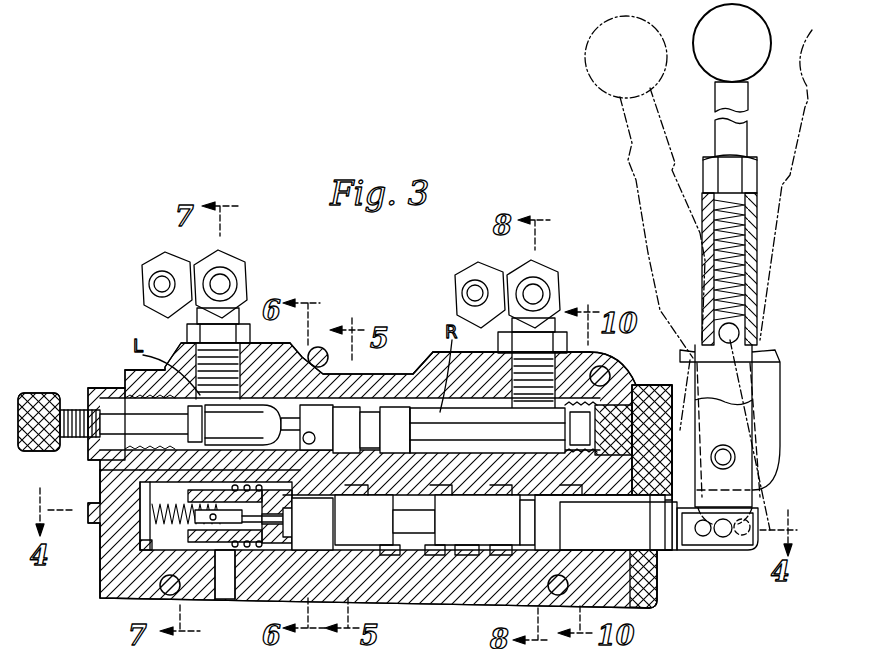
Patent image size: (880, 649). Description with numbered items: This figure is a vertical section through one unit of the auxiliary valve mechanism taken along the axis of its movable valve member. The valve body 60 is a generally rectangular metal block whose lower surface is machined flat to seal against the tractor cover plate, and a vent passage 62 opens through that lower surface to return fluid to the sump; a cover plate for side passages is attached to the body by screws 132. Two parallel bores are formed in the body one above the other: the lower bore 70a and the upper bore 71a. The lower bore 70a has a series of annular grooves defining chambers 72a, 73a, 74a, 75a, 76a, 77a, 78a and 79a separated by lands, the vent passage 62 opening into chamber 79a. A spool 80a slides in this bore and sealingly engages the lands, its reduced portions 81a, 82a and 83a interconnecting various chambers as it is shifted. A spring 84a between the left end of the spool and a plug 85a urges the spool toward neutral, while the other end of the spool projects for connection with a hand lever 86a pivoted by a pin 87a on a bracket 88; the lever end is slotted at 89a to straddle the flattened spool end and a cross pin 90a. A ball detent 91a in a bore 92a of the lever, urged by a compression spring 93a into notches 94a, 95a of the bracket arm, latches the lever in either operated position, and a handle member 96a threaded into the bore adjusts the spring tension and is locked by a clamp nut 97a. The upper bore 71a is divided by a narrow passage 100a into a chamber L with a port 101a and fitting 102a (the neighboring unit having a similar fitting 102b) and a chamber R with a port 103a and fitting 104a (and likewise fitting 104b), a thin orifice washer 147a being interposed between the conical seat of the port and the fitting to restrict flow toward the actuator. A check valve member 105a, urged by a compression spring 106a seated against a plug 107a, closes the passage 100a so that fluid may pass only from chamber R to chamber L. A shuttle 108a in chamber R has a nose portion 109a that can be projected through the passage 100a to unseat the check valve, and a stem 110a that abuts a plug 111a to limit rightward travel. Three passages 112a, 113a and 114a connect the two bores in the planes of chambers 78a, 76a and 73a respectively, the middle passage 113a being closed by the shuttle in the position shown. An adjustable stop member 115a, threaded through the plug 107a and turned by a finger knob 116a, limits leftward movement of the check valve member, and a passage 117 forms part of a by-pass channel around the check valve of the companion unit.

The valve body 60 is at (123, 573).
The vent passage 62 is at (236, 585).
The lower valve bore 70a is at (468, 560).
The upper valve bore 71a is at (432, 412).
The valve chamber 72a is at (585, 503).
The valve chamber 73a is at (537, 503).
The valve chamber 74a is at (497, 557).
The valve chamber 75a is at (440, 557).
The valve chamber 76a is at (395, 555).
The valve chamber 77a is at (357, 555).
The valve chamber 78a is at (310, 553).
The valve chamber 79a is at (230, 548).
The valve spool 80a is at (660, 538).
The reduced portion 81a is at (568, 524).
The reduced portion 82a is at (423, 519).
The reduced portion 83a is at (318, 518).
The spring 84a is at (135, 482).
The plug 85a is at (118, 540).
The hand lever 86a is at (708, 170).
The pin 87a is at (726, 458).
The bracket 88 is at (766, 478).
The slot 89a is at (728, 540).
The cross pin 90a is at (720, 545).
The ball detent 91a is at (741, 330).
The bore 92a is at (742, 283).
The compression spring 93a is at (753, 248).
The notch 94a is at (697, 358).
The notch 95a is at (758, 352).
The handle member 96a is at (726, 99).
The clamp nut 97a is at (750, 175).
The narrow passage 100a is at (300, 413).
The port 101a is at (203, 390).
The fitting 102a is at (240, 282).
The fitting 102b is at (162, 262).
The port 103a is at (490, 390).
The fitting 104a is at (553, 283).
The fitting 104b is at (478, 272).
The check valve member 105a is at (257, 383).
The compression spring 106a is at (130, 380).
The plug 107a is at (103, 392).
The shuttle 108a is at (390, 413).
The nose portion 109a is at (332, 413).
The stem 110a is at (520, 431).
The plug 111a is at (632, 397).
The passage 112a is at (292, 464).
The passage 113a is at (416, 455).
The passage 114a is at (550, 447).
The adjustable stop member 115a is at (140, 427).
The finger knob 116a is at (62, 392).
The passage 117 is at (315, 435).
The screws 132 is at (318, 357).
The orifice washer 147a is at (505, 385).